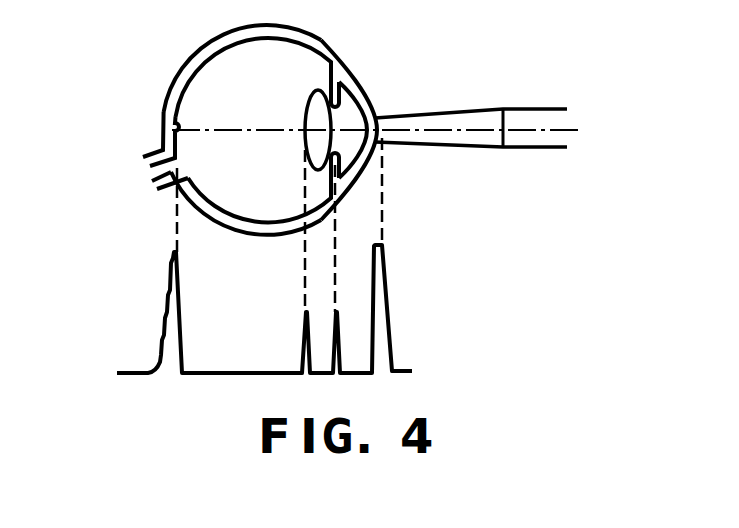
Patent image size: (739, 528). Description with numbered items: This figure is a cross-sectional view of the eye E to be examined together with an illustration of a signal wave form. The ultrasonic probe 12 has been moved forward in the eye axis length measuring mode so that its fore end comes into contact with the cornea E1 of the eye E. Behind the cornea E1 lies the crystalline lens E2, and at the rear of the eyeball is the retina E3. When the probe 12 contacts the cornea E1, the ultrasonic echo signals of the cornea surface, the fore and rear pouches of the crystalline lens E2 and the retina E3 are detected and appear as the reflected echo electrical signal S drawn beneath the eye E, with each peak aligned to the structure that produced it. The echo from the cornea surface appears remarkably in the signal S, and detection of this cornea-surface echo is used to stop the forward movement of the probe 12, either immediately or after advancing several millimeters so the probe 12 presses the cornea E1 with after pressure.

The eye to be examined E is at (182, 70).
The cornea E1 is at (375, 110).
The crystalline lens E2 is at (330, 72).
The retina E3 is at (165, 117).
The ultrasonic probe 12 is at (483, 114).
The reflected echo electrical signal S is at (388, 306).